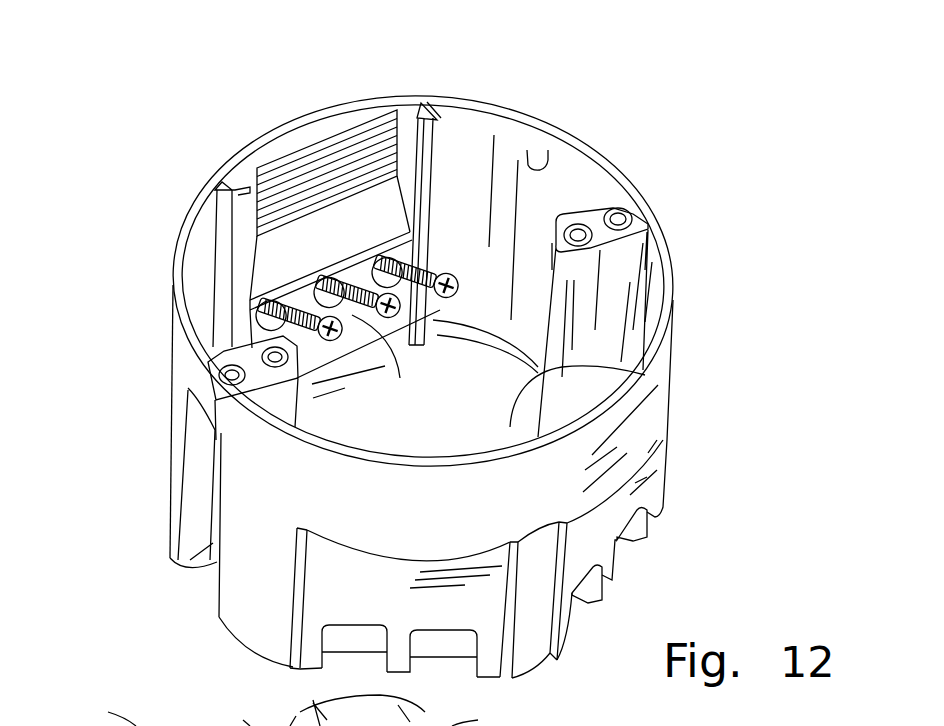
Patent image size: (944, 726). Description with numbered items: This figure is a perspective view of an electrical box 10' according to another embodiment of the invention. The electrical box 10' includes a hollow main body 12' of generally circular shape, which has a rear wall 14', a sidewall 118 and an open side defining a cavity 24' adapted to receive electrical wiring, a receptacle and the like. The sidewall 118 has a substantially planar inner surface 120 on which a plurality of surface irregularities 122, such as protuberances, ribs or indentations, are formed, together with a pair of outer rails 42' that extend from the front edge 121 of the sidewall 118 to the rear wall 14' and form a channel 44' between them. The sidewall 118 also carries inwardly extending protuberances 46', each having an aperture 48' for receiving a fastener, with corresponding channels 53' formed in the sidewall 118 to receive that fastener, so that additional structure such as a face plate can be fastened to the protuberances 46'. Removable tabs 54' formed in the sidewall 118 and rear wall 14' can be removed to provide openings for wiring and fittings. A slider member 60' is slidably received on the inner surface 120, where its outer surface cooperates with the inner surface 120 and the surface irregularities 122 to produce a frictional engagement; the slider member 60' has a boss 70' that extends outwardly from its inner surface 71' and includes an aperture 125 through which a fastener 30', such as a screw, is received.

The electrical box 10' is at (405, 378).
The main body 12' is at (388, 389).
The rear wall 14' is at (586, 281).
The cavity 24' is at (605, 339).
The fastener 30' is at (367, 198).
The outer rails 42' is at (345, 202).
The channel 44' is at (415, 137).
The protuberances 46' is at (419, 300).
The aperture 48' is at (422, 302).
The channels 53' is at (180, 502).
The removable tab 54' is at (484, 602).
The slider member 60' is at (366, 226).
The boss 70' is at (345, 359).
The inner surface 71' is at (331, 271).
The sidewall 118 is at (597, 155).
The inner surface 120 is at (548, 155).
The front edge 121 is at (342, 125).
The surface irregularities 122 is at (412, 285).
The aperture 125 is at (402, 378).